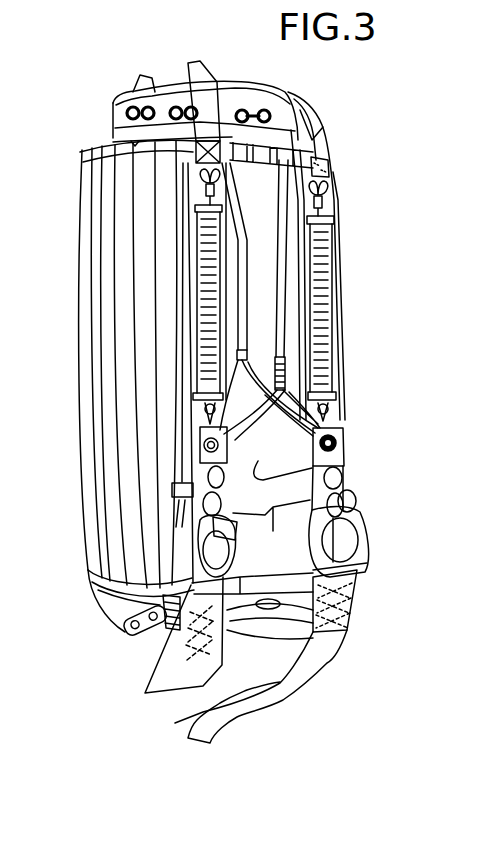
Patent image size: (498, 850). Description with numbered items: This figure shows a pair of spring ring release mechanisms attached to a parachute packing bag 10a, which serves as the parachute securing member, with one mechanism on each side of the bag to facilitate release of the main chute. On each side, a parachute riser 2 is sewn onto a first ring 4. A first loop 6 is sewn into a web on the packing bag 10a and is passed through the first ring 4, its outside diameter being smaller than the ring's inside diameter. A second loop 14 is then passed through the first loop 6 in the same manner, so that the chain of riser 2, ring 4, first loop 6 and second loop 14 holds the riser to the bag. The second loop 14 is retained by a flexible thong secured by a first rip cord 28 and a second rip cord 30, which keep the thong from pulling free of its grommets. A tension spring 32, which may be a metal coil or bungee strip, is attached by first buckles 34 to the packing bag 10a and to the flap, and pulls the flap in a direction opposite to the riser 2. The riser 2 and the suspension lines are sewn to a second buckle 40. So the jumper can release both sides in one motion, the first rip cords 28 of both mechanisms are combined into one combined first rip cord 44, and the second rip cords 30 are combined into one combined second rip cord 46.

The parachute riser 2 is at (200, 683).
The first ring 4 is at (362, 543).
The first loop 6 is at (271, 534).
The packing bag 10a is at (120, 290).
The second loop 14 is at (279, 458).
The first rip cord 28 is at (288, 395).
The second rip cord 30 is at (220, 369).
The tension spring 32 is at (323, 310).
The first buckles 34 is at (203, 187).
The second buckle 40 is at (128, 632).
The combined first rip cord 44 is at (279, 365).
The combined second rip cord 46 is at (240, 233).